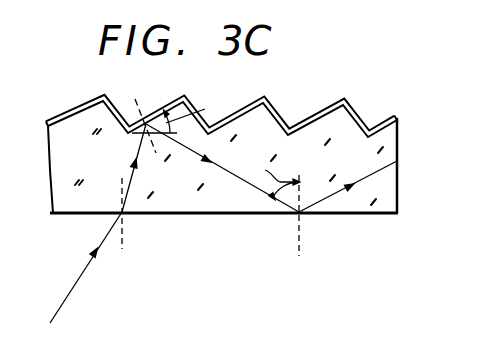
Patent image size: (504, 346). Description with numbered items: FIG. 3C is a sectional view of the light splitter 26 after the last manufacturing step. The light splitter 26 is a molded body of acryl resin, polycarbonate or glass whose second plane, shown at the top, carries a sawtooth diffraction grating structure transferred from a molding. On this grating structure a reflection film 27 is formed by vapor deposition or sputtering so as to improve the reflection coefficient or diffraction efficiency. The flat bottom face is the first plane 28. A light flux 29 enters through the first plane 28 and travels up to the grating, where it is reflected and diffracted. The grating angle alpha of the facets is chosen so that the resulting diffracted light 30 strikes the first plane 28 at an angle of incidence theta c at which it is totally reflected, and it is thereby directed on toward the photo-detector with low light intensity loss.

The light splitter 26 is at (385, 185).
The reflection film 27 is at (322, 114).
The first plane 28 is at (362, 217).
The light flux 29 is at (73, 287).
The diffracted light 30 is at (243, 181).